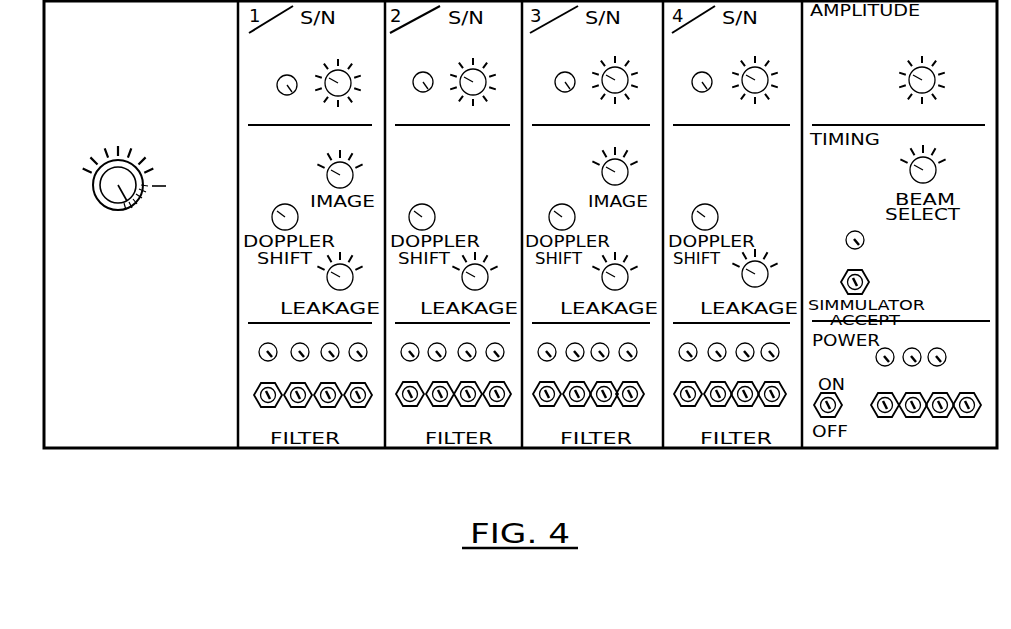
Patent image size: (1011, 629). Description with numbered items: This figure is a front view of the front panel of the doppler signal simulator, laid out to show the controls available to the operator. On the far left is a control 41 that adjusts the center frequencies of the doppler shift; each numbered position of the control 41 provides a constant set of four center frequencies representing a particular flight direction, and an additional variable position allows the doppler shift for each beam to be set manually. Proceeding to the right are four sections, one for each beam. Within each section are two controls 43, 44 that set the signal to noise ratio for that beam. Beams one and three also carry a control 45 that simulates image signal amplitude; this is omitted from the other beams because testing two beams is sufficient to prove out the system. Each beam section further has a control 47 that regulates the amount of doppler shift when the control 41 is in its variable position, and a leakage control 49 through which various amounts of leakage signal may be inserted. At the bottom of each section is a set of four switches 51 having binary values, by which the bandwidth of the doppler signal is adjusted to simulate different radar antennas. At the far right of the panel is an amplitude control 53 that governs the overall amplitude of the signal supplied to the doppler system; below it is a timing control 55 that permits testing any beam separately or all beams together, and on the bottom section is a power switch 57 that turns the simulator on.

The control 41 is at (124, 210).
The control 43 is at (336, 78).
The control 44 is at (290, 94).
The control 45 is at (334, 170).
The control 47 is at (285, 208).
The leakage control 49 is at (327, 277).
The set of four switches 51 is at (375, 407).
The amplitude control 53 is at (920, 80).
The timing control 55 is at (915, 172).
The power switch 57 is at (843, 400).